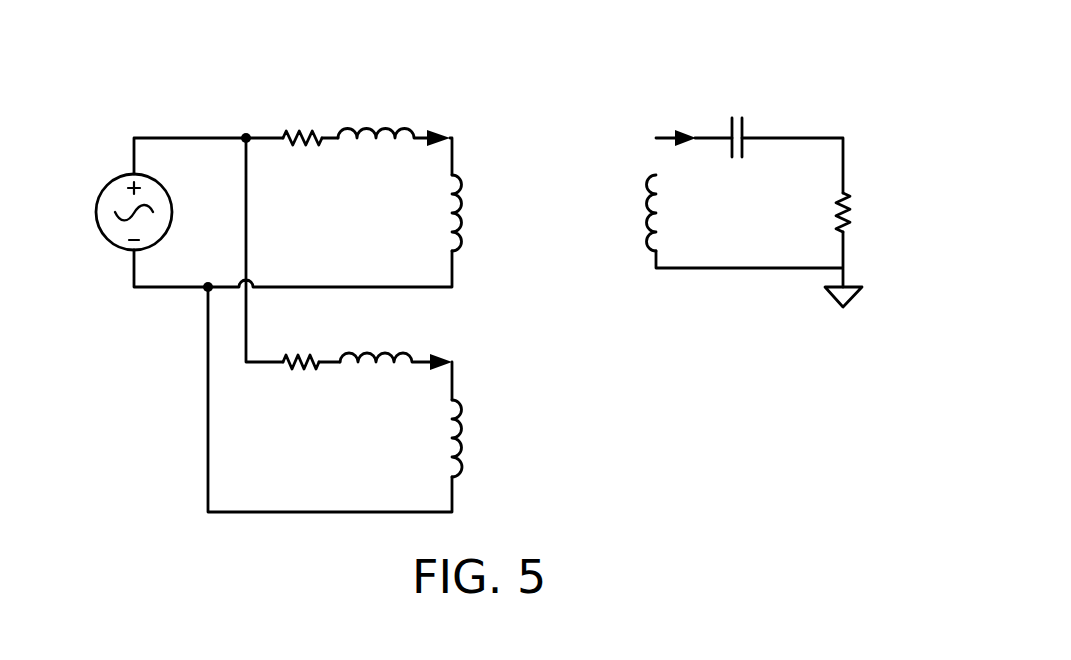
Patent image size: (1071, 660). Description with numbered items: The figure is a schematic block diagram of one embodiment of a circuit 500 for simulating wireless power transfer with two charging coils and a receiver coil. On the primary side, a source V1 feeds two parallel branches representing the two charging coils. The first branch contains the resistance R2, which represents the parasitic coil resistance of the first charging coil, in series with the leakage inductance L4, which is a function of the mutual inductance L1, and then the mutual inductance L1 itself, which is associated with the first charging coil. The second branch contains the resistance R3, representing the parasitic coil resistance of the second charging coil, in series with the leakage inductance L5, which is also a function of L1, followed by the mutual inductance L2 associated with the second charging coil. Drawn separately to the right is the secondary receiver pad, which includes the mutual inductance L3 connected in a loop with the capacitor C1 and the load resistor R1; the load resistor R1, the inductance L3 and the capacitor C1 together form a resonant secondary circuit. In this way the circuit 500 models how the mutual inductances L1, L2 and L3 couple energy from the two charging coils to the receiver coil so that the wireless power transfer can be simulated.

The circuit 500 is at (122, 75).
The voltage source V1 is at (152, 212).
The resistance R2 is at (303, 167).
The leakage inductance L4 is at (403, 135).
The mutual inductance L1 is at (489, 213).
The resistance R3 is at (304, 391).
The leakage inductance L5 is at (405, 360).
The mutual inductance L2 is at (489, 438).
The mutual inductance L3 is at (613, 213).
The capacitor C1 is at (731, 167).
The load resistor R1 is at (826, 212).